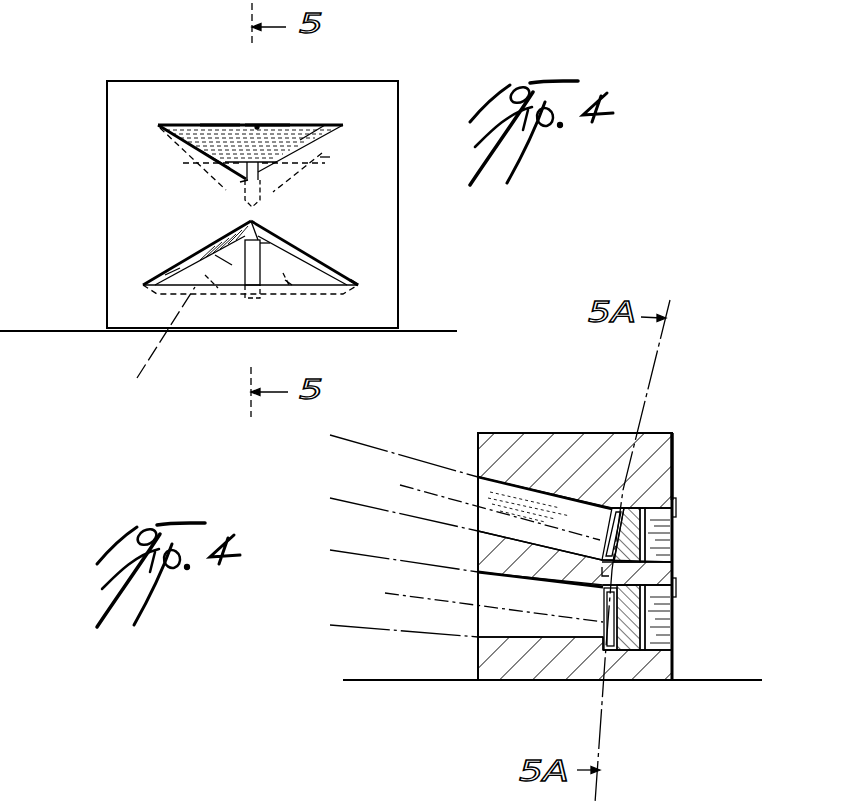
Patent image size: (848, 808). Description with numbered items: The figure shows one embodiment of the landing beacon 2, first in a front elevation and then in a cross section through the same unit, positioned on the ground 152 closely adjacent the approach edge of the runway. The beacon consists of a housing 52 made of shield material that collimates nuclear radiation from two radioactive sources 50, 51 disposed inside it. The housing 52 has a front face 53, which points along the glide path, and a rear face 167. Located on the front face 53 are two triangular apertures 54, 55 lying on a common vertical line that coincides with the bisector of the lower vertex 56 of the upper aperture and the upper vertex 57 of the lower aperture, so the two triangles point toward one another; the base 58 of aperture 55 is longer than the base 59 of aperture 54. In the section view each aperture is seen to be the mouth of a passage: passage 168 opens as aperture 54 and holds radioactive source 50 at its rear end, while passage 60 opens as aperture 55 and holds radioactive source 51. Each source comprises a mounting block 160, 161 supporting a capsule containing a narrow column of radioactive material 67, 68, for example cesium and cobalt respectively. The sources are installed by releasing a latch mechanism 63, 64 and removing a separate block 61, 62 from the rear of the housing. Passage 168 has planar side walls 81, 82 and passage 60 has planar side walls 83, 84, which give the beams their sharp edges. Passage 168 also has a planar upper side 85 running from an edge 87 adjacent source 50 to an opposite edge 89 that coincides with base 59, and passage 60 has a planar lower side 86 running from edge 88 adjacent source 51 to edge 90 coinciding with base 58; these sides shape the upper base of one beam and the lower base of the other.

In FIG. 4, the landing beacon 2 is at (135, 58).
In FIG. 5, the landing beacon 2 is at (626, 417).
In FIG. 4, the radioactive source 50 is at (248, 170).
In FIG. 5, the radioactive source 50 is at (601, 541).
In FIG. 4, the radioactive source 51 is at (257, 262).
In FIG. 5, the radioactive source 51 is at (601, 631).
In FIG. 4, the housing 52 is at (358, 95).
In FIG. 5, the housing 52 is at (549, 461).
In FIG. 4, the front face 53 is at (128, 183).
In FIG. 5, the front face 53 is at (478, 440).
In FIG. 4, the aperture 54 is at (215, 153).
In FIG. 5, the aperture 54 is at (474, 487).
In FIG. 4, the aperture 55 is at (222, 268).
In FIG. 5, the aperture 55 is at (477, 591).
In FIG. 4, the lower vertex 56 is at (242, 183).
In FIG. 4, the upper vertex 57 is at (259, 233).
In FIG. 4, the base 58 is at (358, 285).
In FIG. 4, the base 59 is at (218, 125).
In FIG. 5, the passage 60 is at (490, 616).
In FIG. 5, the block 61 is at (663, 523).
In FIG. 5, the block 62 is at (660, 607).
In FIG. 5, the latch mechanism 63 is at (675, 500).
In FIG. 5, the latch mechanism 64 is at (676, 591).
In FIG. 5, the radioactive material 67 is at (663, 538).
In FIG. 5, the radioactive material 68 is at (674, 622).
In FIG. 4, the planar side wall 81 is at (212, 147).
In FIG. 4, the planar side wall 82 is at (296, 140).
In FIG. 4, the planar side wall 83 is at (228, 262).
In FIG. 4, the planar side wall 84 is at (265, 243).
In FIG. 4, the planar upper side 85 is at (195, 133).
In FIG. 5, the planar upper side 85 is at (509, 482).
In FIG. 4, the planar lower side 86 is at (154, 336).
In FIG. 5, the planar lower side 86 is at (527, 640).
In FIG. 4, the edge 87 is at (325, 157).
In FIG. 4, the edge 88 is at (288, 282).
In FIG. 4, the edge 89 is at (253, 125).
In FIG. 4, the edge 90 is at (178, 268).
In FIG. 4, the ground 152 is at (80, 330).
In FIG. 5, the ground 152 is at (452, 680).
In FIG. 4, the mounting block 160 is at (257, 163).
In FIG. 5, the mounting block 160 is at (641, 504).
In FIG. 4, the mounting block 161 is at (223, 247).
In FIG. 5, the mounting block 161 is at (618, 584).
In FIG. 5, the rear face 167 is at (672, 447).
In FIG. 4, the passage 168 is at (235, 135).
In FIG. 5, the passage 168 is at (483, 517).